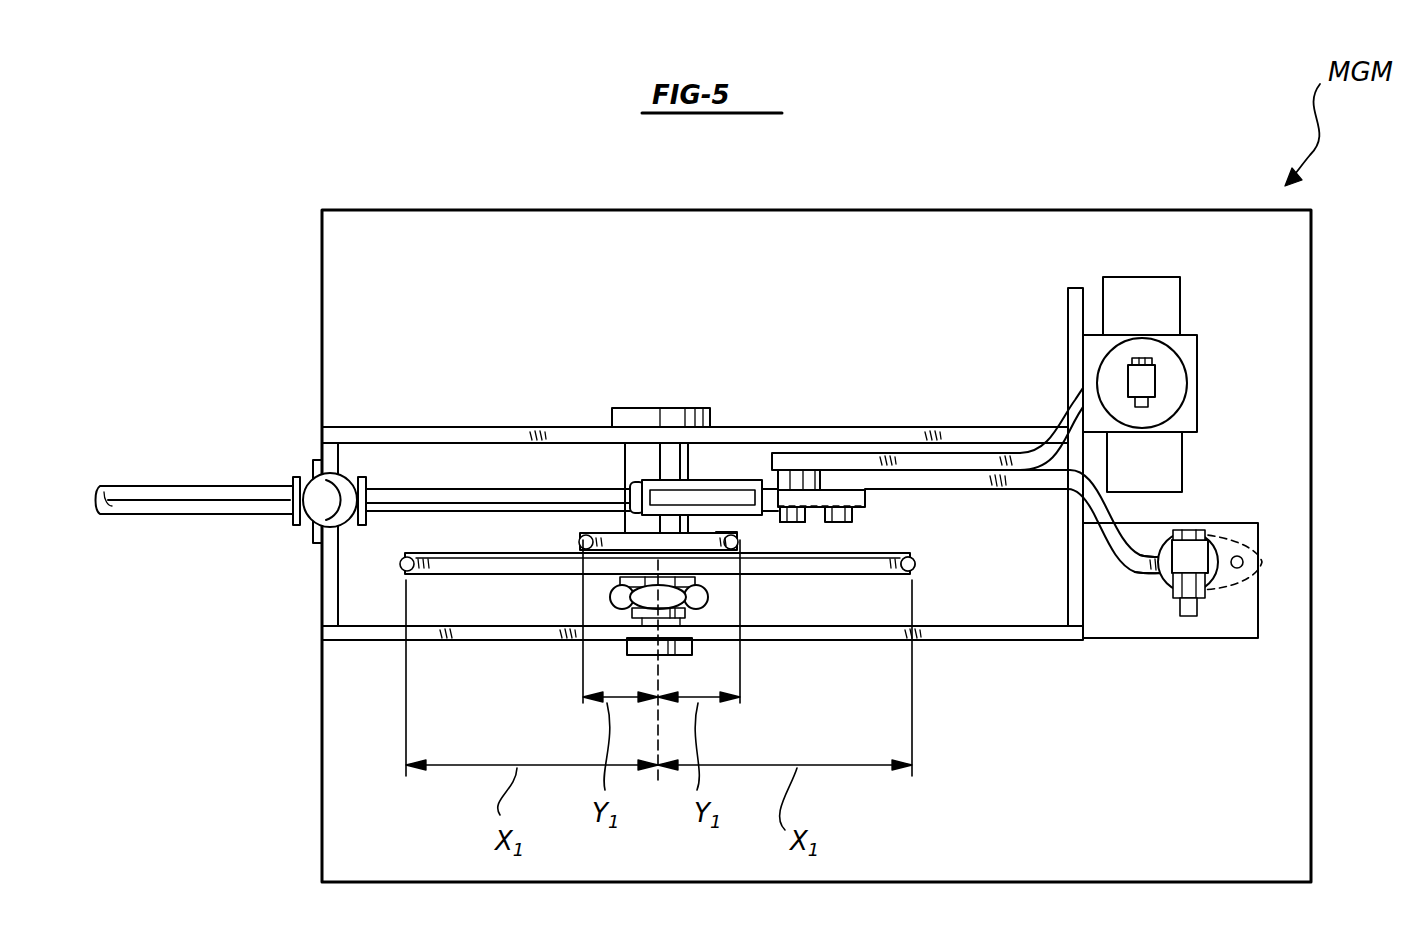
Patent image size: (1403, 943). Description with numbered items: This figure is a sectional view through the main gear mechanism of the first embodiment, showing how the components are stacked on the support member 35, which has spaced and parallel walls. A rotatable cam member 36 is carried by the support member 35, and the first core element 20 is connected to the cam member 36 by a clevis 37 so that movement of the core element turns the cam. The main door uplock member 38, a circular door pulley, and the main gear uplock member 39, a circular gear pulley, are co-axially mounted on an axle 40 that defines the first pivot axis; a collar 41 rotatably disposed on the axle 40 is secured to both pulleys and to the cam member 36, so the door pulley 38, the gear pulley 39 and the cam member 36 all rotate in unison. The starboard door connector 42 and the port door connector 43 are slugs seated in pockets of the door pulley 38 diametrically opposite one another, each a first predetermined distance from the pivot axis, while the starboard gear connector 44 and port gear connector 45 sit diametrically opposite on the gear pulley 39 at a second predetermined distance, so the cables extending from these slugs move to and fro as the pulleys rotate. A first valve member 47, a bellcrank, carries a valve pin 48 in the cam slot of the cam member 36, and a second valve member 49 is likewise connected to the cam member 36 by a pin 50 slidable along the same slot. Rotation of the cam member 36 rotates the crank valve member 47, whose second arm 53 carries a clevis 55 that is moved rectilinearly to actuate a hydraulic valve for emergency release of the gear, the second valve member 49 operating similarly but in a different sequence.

The first core element 20 is at (207, 491).
The support member 35 is at (472, 432).
The rotatable cam member 36 is at (769, 497).
The clevis 37 is at (708, 484).
The main door uplock member 38 is at (447, 578).
The main gear uplock member 39 is at (716, 531).
The axle 40 is at (690, 655).
The collar 41 is at (633, 457).
The starboard door connector 42 is at (914, 558).
The port door connector 43 is at (405, 562).
The starboard gear connector 44 is at (745, 540).
The port gear connector 45 is at (577, 547).
The first valve member 47 is at (1105, 518).
The valve pin 48 is at (860, 526).
The second valve member 49 is at (962, 462).
The pin 50 is at (790, 523).
The second arm 53 is at (1042, 484).
The clevis 55 is at (1233, 590).